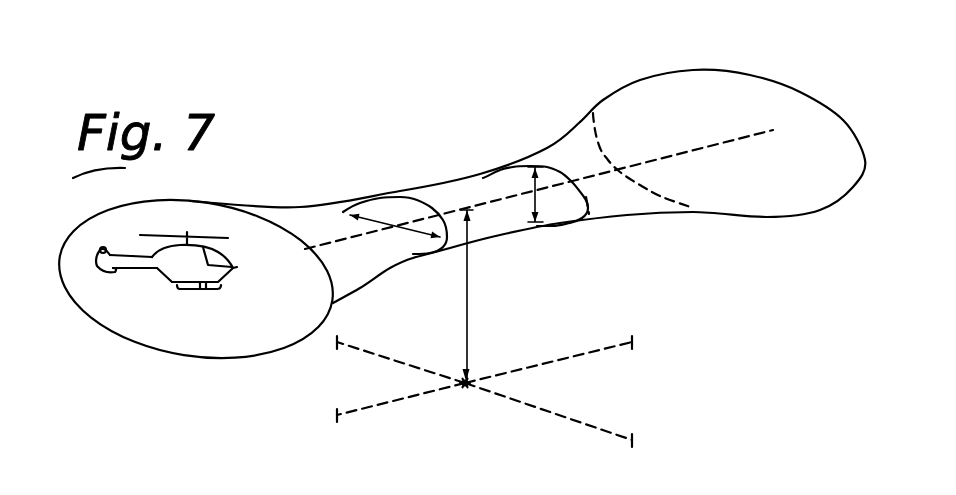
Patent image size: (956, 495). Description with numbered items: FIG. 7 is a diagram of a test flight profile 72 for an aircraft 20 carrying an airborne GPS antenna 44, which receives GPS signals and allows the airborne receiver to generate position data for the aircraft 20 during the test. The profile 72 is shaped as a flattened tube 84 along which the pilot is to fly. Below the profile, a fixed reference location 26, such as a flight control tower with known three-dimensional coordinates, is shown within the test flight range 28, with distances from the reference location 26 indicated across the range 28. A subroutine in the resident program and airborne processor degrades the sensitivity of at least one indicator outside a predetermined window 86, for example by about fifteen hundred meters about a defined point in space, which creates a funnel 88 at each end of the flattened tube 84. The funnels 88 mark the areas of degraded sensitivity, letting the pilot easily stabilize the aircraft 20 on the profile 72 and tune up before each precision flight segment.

The aircraft 20 is at (157, 267).
The airborne GPS antenna 44 is at (187, 234).
The reference location 26 is at (463, 388).
The test flight range 28 is at (580, 122).
The flight test profile 72 is at (760, 133).
The flattened tube 84 is at (433, 181).
The predetermined window 86 is at (283, 349).
The funnel 88 is at (173, 333).